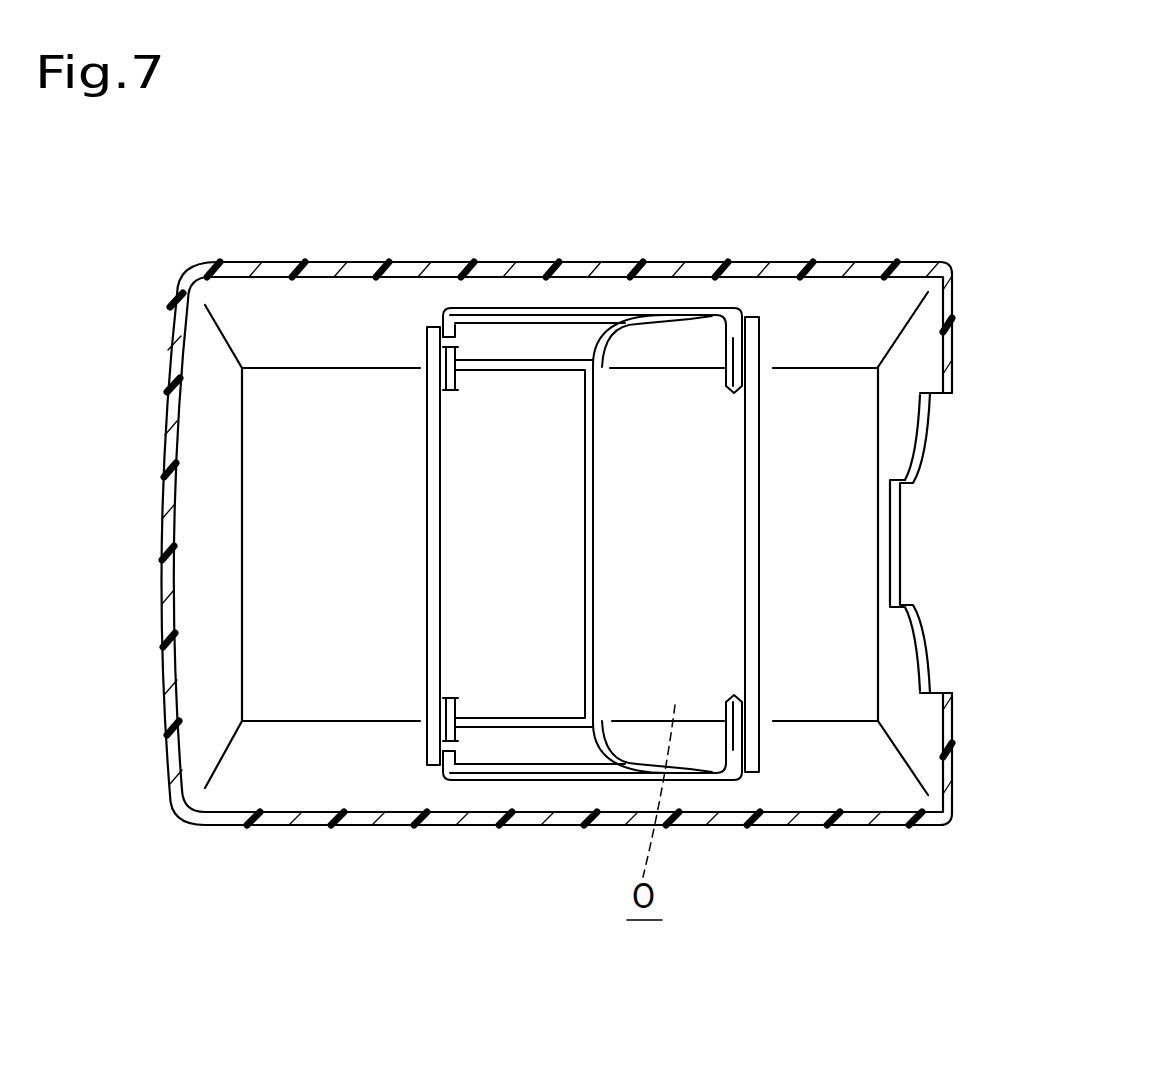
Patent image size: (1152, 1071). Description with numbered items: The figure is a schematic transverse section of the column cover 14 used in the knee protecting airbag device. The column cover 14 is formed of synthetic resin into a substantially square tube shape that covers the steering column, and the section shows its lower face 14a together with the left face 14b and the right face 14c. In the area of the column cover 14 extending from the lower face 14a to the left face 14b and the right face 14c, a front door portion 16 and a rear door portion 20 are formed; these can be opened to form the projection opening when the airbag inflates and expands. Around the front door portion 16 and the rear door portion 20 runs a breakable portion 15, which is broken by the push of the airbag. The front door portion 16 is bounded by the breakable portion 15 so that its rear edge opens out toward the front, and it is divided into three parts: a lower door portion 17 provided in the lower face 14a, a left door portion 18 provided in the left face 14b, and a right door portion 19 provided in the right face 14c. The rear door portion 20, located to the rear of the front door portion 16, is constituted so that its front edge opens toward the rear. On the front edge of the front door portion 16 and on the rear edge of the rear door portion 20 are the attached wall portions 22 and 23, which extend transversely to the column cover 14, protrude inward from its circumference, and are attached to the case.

The column cover 14 is at (646, 545).
The lower face 14a is at (860, 572).
The left face 14b is at (828, 792).
The right face 14c is at (827, 297).
The breakable portion 15 is at (593, 572).
The front door portion 16 is at (434, 544).
The lower door portion 17 is at (482, 527).
The left door portion 18 is at (482, 742).
The right door portion 19 is at (482, 347).
The rear door portion 20 is at (725, 481).
The attached wall portion 22 is at (440, 642).
The attached wall portion 23 is at (755, 527).